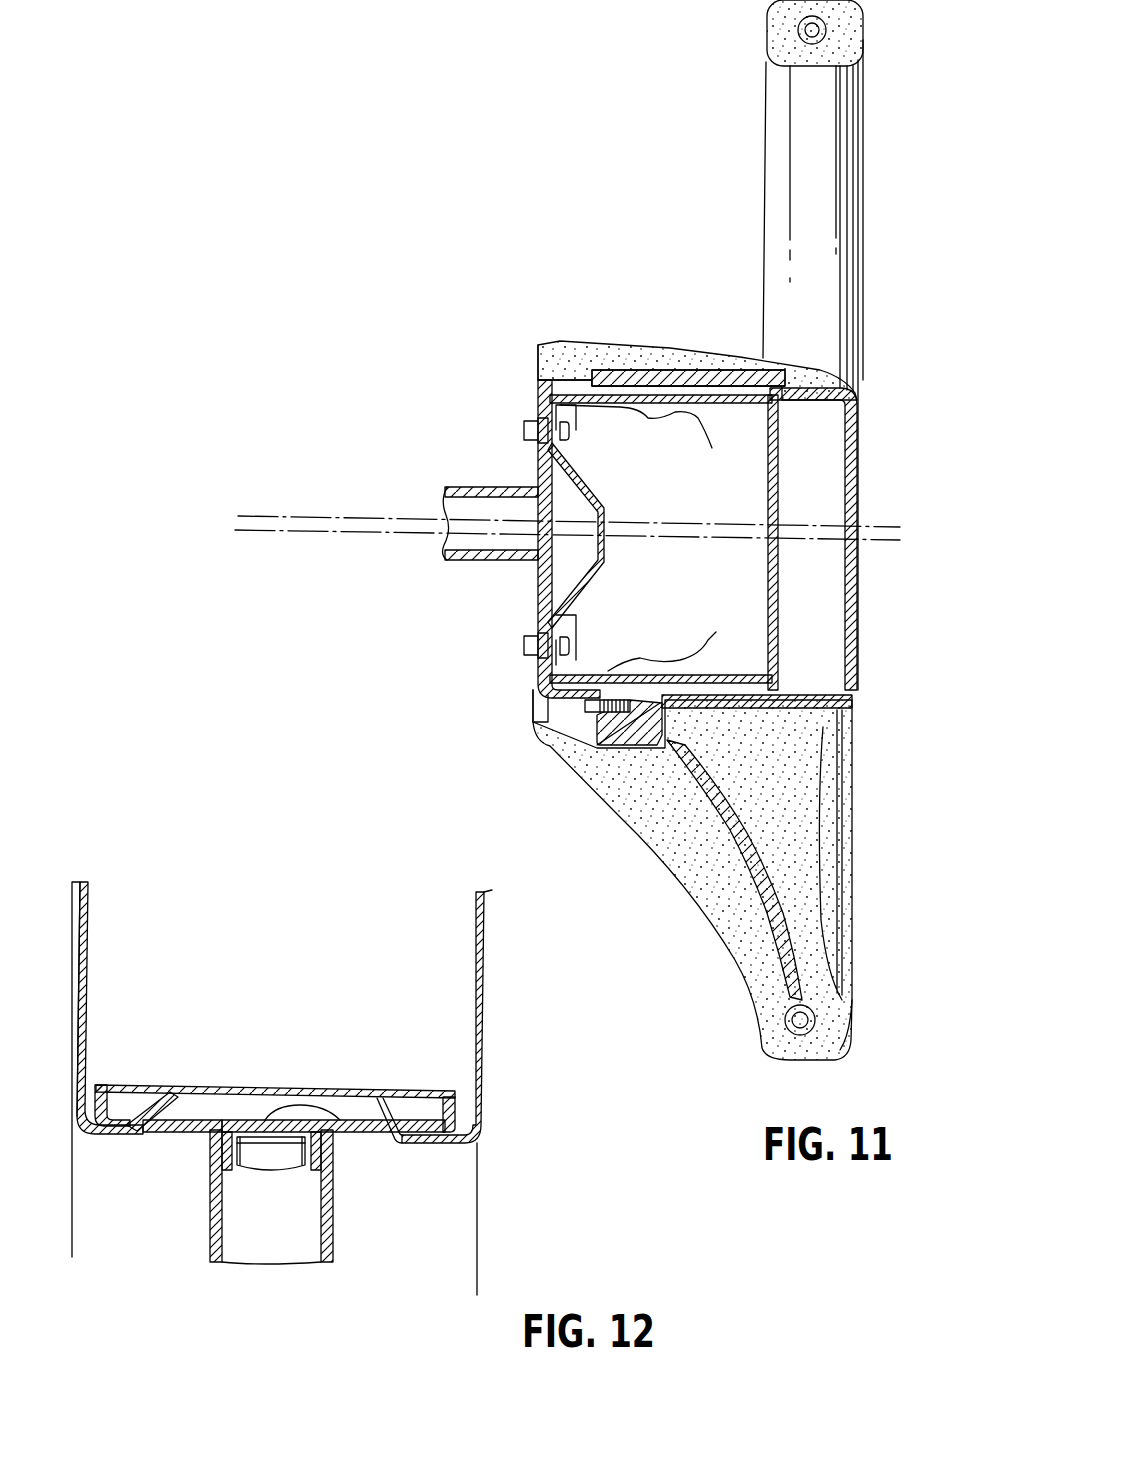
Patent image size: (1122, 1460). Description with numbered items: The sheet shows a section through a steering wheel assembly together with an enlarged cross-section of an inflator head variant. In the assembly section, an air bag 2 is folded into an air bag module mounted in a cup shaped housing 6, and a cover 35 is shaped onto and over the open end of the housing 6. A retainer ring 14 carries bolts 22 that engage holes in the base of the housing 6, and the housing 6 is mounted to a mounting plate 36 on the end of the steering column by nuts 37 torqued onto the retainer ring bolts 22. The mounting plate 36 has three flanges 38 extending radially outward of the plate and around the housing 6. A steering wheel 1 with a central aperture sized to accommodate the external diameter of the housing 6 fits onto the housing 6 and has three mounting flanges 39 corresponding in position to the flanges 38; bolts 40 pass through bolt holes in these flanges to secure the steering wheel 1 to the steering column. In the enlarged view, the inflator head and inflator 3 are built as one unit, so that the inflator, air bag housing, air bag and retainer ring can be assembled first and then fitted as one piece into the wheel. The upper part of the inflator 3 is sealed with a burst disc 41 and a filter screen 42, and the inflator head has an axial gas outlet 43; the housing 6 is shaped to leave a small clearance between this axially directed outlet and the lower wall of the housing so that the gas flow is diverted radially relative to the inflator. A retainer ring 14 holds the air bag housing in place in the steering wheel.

In FIG. 11, the steering wheel 1 is at (570, 468).
In FIG. 11, the air bag 2 is at (654, 408).
In FIG. 12, the inflator 3 is at (338, 1227).
In FIG. 11, the cup shaped housing 6 is at (702, 397).
In FIG. 12, the cup shaped housing 6 is at (482, 1040).
In FIG. 12, the retainer ring 14 is at (453, 1112).
In FIG. 11, the bolts 22 is at (548, 405).
In FIG. 11, the cover 35 is at (858, 405).
In FIG. 11, the mounting plate 36 is at (538, 477).
In FIG. 11, the nuts 37 is at (540, 420).
In FIG. 11, the flanges 38 is at (600, 728).
In FIG. 11, the mounting flanges 39 is at (627, 733).
In FIG. 11, the bolts 40 is at (583, 705).
In FIG. 12, the burst disc 41 is at (263, 1160).
In FIG. 12, the filter screen 42 is at (175, 1133).
In FIG. 12, the axial gas outlet 43 is at (358, 1137).